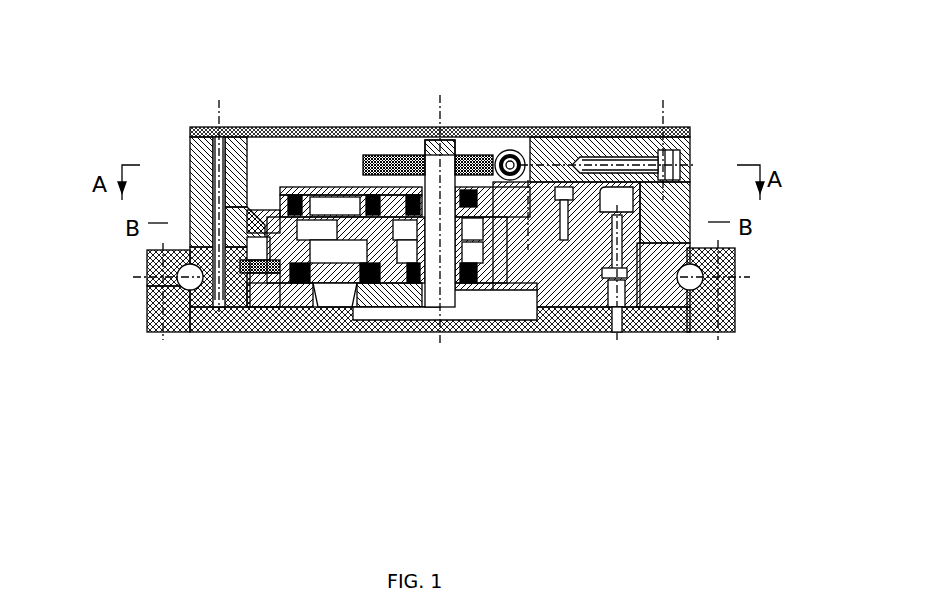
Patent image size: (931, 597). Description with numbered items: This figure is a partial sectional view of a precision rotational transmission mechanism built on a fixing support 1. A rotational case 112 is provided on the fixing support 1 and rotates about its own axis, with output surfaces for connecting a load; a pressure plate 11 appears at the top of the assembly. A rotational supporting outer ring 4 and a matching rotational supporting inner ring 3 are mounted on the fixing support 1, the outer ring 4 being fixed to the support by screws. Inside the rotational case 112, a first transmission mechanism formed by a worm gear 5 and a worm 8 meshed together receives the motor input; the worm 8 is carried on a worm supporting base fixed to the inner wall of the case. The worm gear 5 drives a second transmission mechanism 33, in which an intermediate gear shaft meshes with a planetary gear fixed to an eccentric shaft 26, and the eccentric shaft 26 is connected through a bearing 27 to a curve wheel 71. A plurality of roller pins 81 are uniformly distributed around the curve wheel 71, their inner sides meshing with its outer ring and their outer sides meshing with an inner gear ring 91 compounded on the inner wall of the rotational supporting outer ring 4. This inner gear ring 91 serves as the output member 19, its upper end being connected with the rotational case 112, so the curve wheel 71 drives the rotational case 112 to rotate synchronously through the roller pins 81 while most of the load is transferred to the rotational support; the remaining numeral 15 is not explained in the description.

The fixing support 1 is at (167, 333).
The rotational supporting inner ring 3 is at (145, 293).
The rotational supporting outer ring 4 is at (143, 263).
The worm gear 5 is at (470, 155).
The worm 8 is at (522, 158).
The pressure plate 11 is at (687, 142).
The hub 15 is at (448, 150).
The output member 19 is at (690, 218).
The eccentric shaft 26 is at (190, 217).
The bearing 27 is at (287, 190).
The second transmission mechanism 33 is at (433, 175).
The curve wheel 71 is at (193, 182).
The roller pins 81 is at (708, 293).
The inner gear ring 91 is at (690, 232).
The rotational case 112 is at (690, 175).